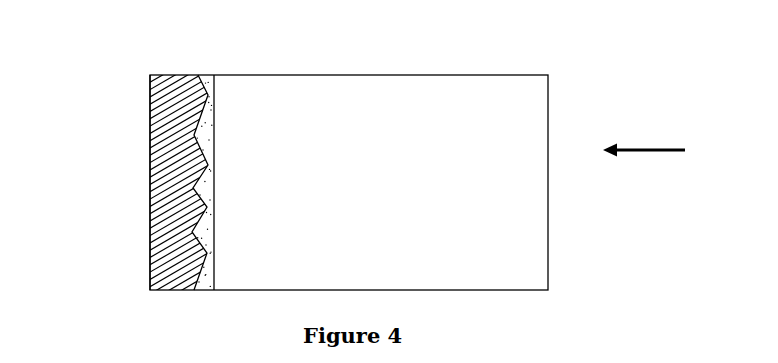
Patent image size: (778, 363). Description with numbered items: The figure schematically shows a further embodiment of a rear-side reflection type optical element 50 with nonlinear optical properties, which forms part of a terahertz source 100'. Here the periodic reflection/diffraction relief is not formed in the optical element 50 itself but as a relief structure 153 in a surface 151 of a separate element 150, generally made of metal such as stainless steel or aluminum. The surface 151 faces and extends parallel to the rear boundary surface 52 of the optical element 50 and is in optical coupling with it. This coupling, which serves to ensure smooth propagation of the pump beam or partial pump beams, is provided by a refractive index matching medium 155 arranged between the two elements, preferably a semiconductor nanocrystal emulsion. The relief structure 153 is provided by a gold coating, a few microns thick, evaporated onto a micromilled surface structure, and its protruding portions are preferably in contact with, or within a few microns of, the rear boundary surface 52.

The optical element 50 is at (515, 255).
The rear boundary surface 52 is at (213, 170).
The separate element 150 is at (157, 260).
The surface of the separate element 151 is at (152, 95).
The relief structure 153 is at (205, 82).
The refractive index matching medium 155 is at (190, 173).
The terahertz source 100' is at (671, 151).